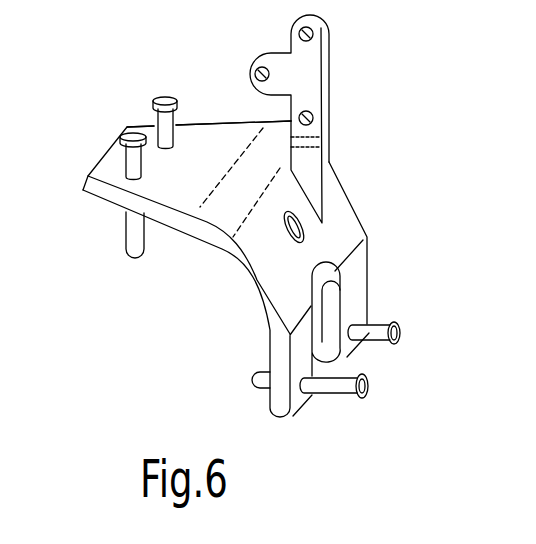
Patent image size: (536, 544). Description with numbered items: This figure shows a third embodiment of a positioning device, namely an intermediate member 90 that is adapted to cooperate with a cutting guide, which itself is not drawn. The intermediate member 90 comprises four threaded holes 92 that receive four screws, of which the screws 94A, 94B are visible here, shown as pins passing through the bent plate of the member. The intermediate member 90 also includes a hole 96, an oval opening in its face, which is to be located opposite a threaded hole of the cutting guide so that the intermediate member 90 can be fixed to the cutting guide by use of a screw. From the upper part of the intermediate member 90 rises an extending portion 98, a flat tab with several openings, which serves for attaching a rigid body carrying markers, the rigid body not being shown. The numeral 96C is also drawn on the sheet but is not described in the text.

The intermediate member 90 is at (348, 194).
The threaded holes 92 is at (179, 136).
The screw 94A is at (323, 386).
The screw 94B is at (157, 119).
The hole 96 is at (287, 240).
The stud pin 96C is at (128, 166).
The extending portion 98 is at (313, 80).